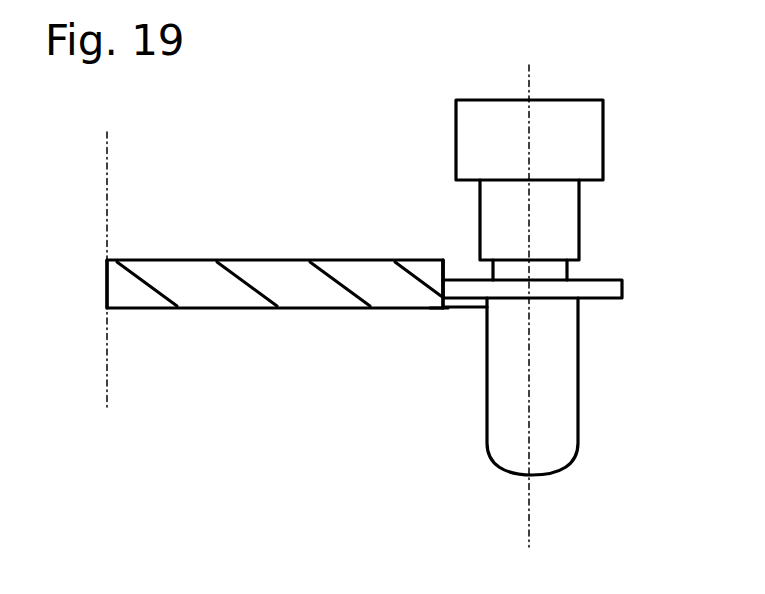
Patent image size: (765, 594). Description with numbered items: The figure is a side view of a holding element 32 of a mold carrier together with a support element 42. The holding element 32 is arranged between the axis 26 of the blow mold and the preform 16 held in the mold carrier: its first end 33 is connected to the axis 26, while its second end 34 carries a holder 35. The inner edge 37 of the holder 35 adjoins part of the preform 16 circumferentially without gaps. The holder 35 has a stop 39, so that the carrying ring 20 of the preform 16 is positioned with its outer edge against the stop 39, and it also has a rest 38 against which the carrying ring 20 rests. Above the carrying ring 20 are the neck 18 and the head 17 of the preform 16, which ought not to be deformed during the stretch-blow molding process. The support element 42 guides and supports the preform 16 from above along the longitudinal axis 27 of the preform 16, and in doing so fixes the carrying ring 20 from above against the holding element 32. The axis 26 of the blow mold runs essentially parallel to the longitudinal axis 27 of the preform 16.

The preform 16 is at (557, 406).
The head 17 is at (580, 217).
The neck 18 is at (560, 272).
The carrying ring 20 is at (622, 298).
The axis 26 is at (110, 181).
The longitudinal axis 27 is at (530, 516).
The holding element 32 is at (262, 258).
The first end 33 is at (92, 258).
The second end 34 is at (430, 278).
The holder 35 is at (448, 310).
The inner edge 37 is at (487, 307).
The rest 38 is at (468, 305).
The stop 39 is at (445, 270).
The support element 42 is at (603, 145).